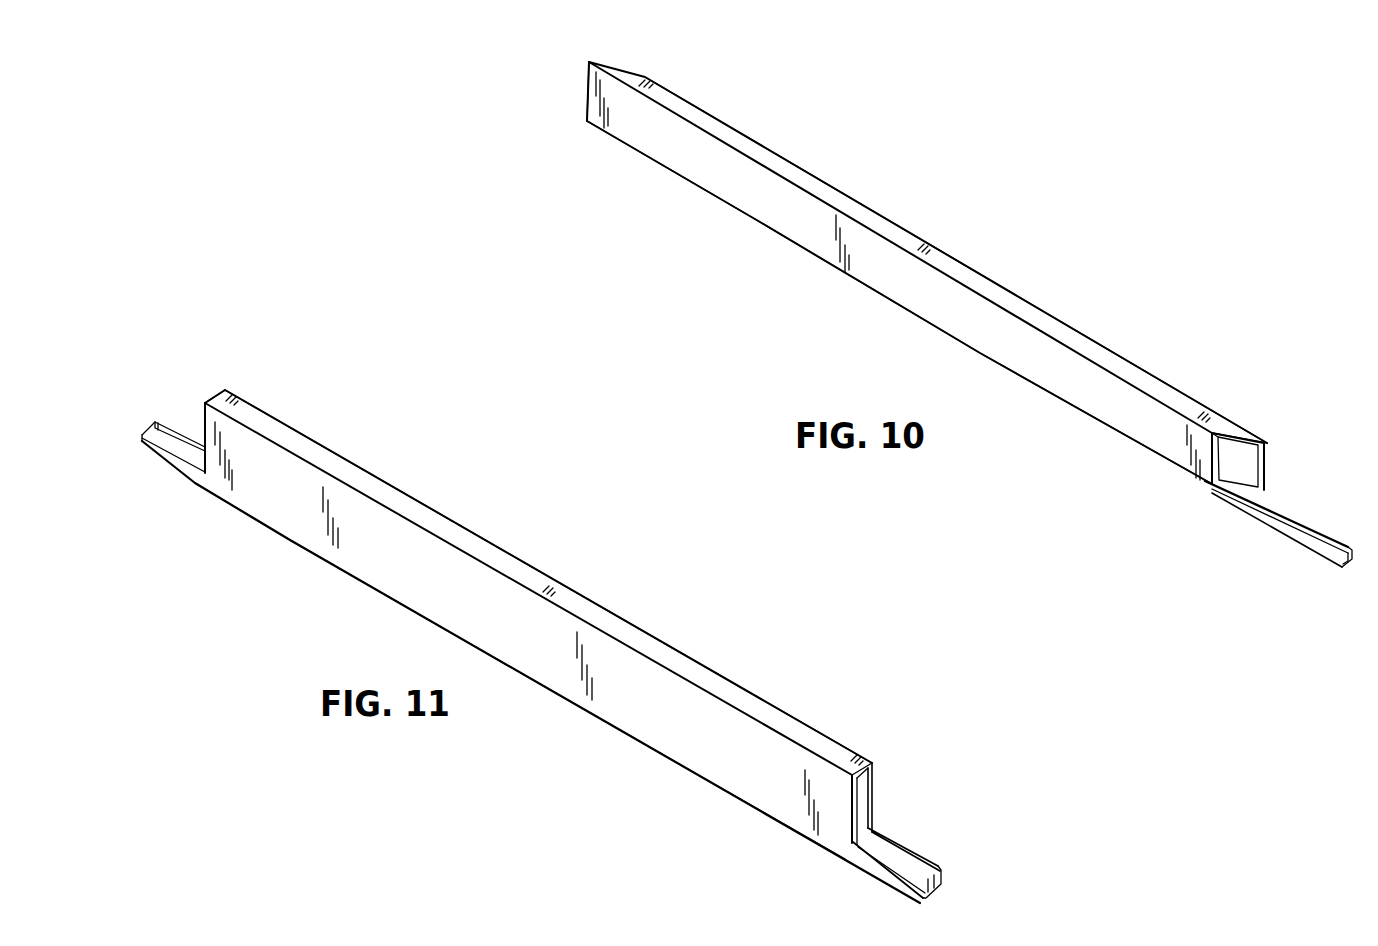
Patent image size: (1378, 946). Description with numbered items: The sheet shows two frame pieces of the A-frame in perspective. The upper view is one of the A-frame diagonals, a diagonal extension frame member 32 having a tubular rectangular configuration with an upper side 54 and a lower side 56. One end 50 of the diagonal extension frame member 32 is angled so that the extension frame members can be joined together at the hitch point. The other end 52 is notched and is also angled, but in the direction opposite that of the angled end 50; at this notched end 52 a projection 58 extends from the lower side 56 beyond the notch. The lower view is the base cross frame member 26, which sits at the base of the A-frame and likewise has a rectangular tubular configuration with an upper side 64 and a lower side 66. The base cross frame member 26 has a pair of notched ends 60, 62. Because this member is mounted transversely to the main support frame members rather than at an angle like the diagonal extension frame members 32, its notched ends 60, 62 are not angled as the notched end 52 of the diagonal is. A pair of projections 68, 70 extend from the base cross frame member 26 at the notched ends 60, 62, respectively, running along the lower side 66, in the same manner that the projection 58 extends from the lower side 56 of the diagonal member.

In FIG. 11, the base cross frame member 26 is at (687, 692).
In FIG. 10, the diagonal extension frame member 32 is at (968, 316).
In FIG. 10, the one end 50 is at (622, 74).
In FIG. 10, the other end 52 is at (1264, 470).
In FIG. 10, the upper side 54 is at (1118, 357).
In FIG. 10, the lower side 56 is at (1107, 432).
In FIG. 10, the projection 58 is at (1316, 548).
In FIG. 11, the notched end 60 is at (207, 400).
In FIG. 11, the notched end 62 is at (871, 790).
In FIG. 11, the upper side 64 is at (410, 502).
In FIG. 11, the lower side 66 is at (663, 756).
In FIG. 11, the projection 68 is at (152, 454).
In FIG. 11, the projection 70 is at (923, 858).